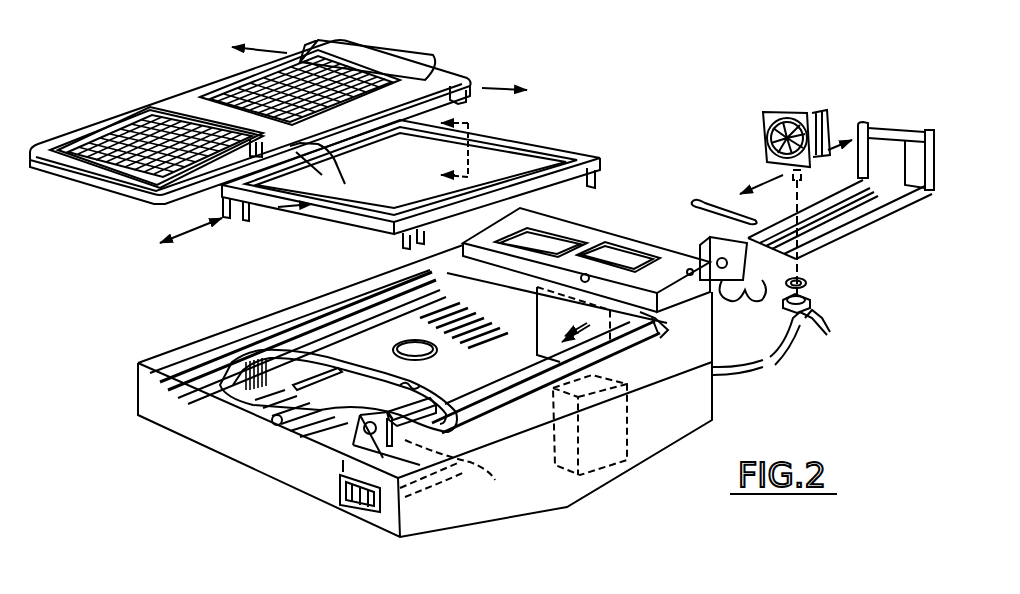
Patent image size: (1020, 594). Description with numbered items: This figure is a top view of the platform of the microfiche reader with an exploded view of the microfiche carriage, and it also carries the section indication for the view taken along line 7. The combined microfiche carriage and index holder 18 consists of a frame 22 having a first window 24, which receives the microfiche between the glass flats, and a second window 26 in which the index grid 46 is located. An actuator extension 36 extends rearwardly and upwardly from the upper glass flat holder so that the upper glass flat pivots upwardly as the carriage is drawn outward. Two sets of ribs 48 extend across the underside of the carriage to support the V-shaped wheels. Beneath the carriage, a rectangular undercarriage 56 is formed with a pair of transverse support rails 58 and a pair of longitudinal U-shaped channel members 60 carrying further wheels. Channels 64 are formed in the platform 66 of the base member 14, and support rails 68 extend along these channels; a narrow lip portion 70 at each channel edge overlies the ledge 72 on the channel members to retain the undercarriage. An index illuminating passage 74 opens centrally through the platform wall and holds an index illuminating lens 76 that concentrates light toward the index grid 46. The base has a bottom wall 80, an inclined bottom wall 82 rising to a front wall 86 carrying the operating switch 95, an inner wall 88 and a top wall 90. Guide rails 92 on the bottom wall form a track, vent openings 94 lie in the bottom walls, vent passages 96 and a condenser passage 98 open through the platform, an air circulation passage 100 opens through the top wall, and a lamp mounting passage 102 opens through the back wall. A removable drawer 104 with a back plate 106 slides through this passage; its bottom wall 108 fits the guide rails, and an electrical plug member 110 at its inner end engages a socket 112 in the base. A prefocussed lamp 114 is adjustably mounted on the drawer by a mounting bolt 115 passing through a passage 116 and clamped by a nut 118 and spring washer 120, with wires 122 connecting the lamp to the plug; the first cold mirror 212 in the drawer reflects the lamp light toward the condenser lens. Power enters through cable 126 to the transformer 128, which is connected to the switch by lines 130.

The base member 14 is at (567, 503).
The combined microfiche carriage and index holder 18 is at (160, 92).
The frame 22 is at (180, 93).
The first window 24 is at (247, 78).
The second window 26 is at (100, 152).
The actuator extension 36 is at (390, 64).
The index grid 46 is at (127, 137).
The ribs 48 is at (467, 96).
The undercarriage 56 is at (266, 203).
The support rails 58 is at (523, 163).
The U-shaped channel members 60 is at (463, 197).
The channels 64 is at (267, 330).
The platform 66 is at (260, 335).
The support rails 68 is at (233, 347).
The lip portion 70 is at (340, 297).
The ledge 72 is at (540, 213).
The index illuminating passage 74 is at (280, 427).
The index illuminating lens 76 is at (267, 417).
The bottom wall 80 is at (380, 392).
The inclined bottom wall 82 is at (232, 403).
The front wall 86 is at (143, 389).
The inner wall 88 is at (660, 340).
The top wall 90 is at (663, 263).
The guide rails 92 is at (440, 410).
The vent openings 94 is at (355, 437).
The operating switch 95 is at (367, 508).
The vent passages 96 is at (467, 302).
The condenser passage 98 is at (403, 343).
The air circulation passage 100 is at (560, 248).
The lamp mounting passage 102 is at (530, 290).
The removable drawer 104 is at (887, 163).
The back plate 106 is at (900, 153).
The bottom wall 108 is at (887, 210).
The electrical plug member 110 is at (720, 262).
The socket 112 is at (408, 383).
The prefocussed lamp 114 is at (768, 110).
The mounting bolt 115 is at (793, 178).
The passage 116 is at (833, 230).
The nut 118 is at (813, 300).
The spring washer 120 is at (810, 279).
The wires 122 is at (827, 108).
The cable 126 is at (752, 373).
The transformer 128 is at (633, 433).
The lines 130 is at (470, 457).
The first cold mirror 212 is at (710, 197).
The section line 7 is at (465, 150).